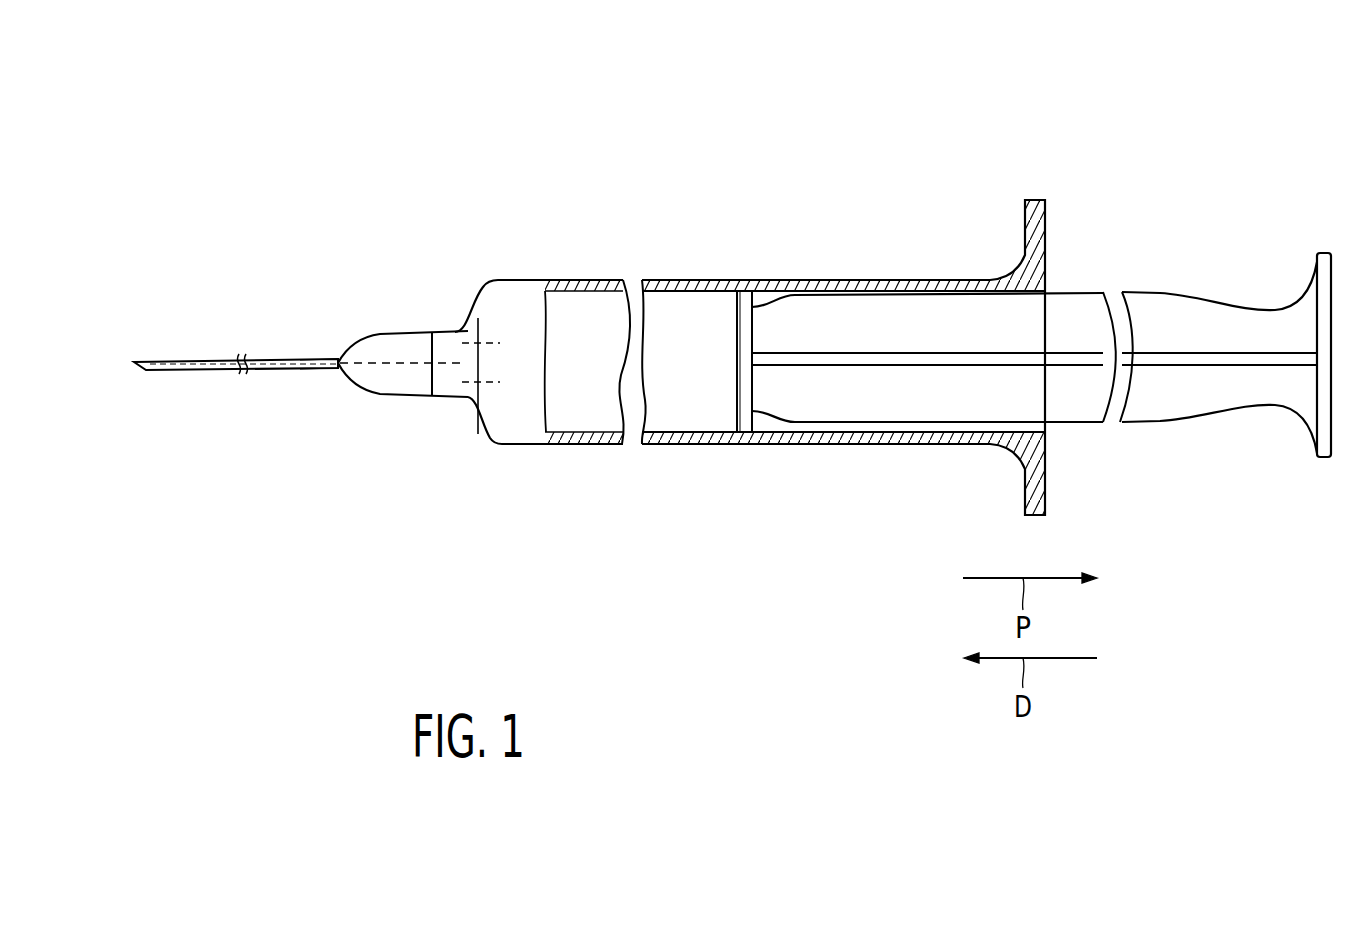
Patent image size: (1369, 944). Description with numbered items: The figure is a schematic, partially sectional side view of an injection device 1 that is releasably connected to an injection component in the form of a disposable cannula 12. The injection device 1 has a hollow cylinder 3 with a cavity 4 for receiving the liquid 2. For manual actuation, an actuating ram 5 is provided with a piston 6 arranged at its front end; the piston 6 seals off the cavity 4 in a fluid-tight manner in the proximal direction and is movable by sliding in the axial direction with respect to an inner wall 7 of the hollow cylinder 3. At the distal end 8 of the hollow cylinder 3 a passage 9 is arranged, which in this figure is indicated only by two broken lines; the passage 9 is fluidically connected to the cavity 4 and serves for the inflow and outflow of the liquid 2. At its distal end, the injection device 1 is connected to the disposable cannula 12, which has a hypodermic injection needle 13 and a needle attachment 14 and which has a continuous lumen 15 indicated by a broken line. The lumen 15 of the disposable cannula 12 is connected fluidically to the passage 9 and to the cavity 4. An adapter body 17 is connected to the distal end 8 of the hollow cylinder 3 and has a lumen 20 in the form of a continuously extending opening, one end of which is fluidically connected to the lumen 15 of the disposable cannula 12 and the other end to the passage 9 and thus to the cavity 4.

The injection device 1 is at (633, 113).
The liquid 2 is at (684, 313).
The hollow cylinder 3 is at (800, 280).
The cavity 4 is at (682, 382).
The actuating ram 5 is at (1155, 292).
The piston 6 is at (745, 445).
The inner wall 7 is at (666, 428).
The distal end 8 is at (487, 250).
The passage 9 is at (498, 343).
The disposable cannula 12 is at (322, 292).
The hypodermic injection needle 13 is at (213, 372).
The needle attachment 14 is at (395, 333).
The lumen 15 is at (325, 371).
The adapter body 17 is at (432, 332).
The lumen 20 is at (445, 368).